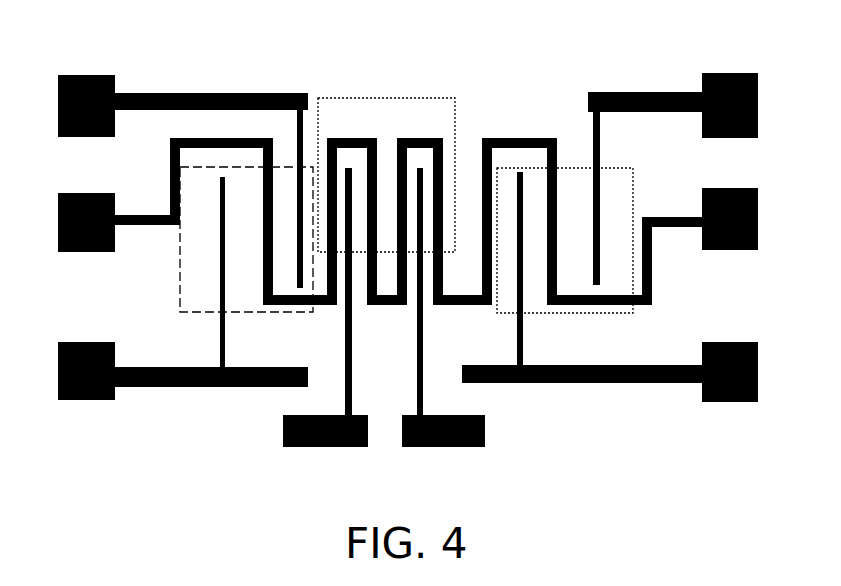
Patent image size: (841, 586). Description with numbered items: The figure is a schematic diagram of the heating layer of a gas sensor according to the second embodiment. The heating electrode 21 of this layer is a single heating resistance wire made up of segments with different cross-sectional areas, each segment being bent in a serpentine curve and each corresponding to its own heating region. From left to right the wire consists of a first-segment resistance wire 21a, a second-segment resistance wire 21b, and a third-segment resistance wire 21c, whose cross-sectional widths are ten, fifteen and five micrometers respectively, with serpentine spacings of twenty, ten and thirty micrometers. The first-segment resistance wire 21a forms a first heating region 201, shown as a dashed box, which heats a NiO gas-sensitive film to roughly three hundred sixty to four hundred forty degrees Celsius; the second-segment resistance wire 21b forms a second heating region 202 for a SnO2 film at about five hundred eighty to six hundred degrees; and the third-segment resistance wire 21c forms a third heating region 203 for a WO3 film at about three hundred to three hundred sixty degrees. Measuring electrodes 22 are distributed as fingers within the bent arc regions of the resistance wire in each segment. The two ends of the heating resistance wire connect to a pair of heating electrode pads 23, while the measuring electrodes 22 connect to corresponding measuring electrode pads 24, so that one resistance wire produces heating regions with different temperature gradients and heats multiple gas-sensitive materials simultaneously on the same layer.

The heating electrode 21 is at (379, 167).
The first-segment resistance wire 21a is at (232, 138).
The second-segment resistance wire 21b is at (348, 138).
The third-segment resistance wire 21c is at (527, 138).
The measuring electrodes 22 is at (424, 366).
The heating electrode pads 23 is at (97, 193).
The measuring electrode pads 24 is at (447, 447).
The first heating region 201 is at (203, 277).
The second heating region 202 is at (426, 122).
The third heating region 203 is at (570, 235).